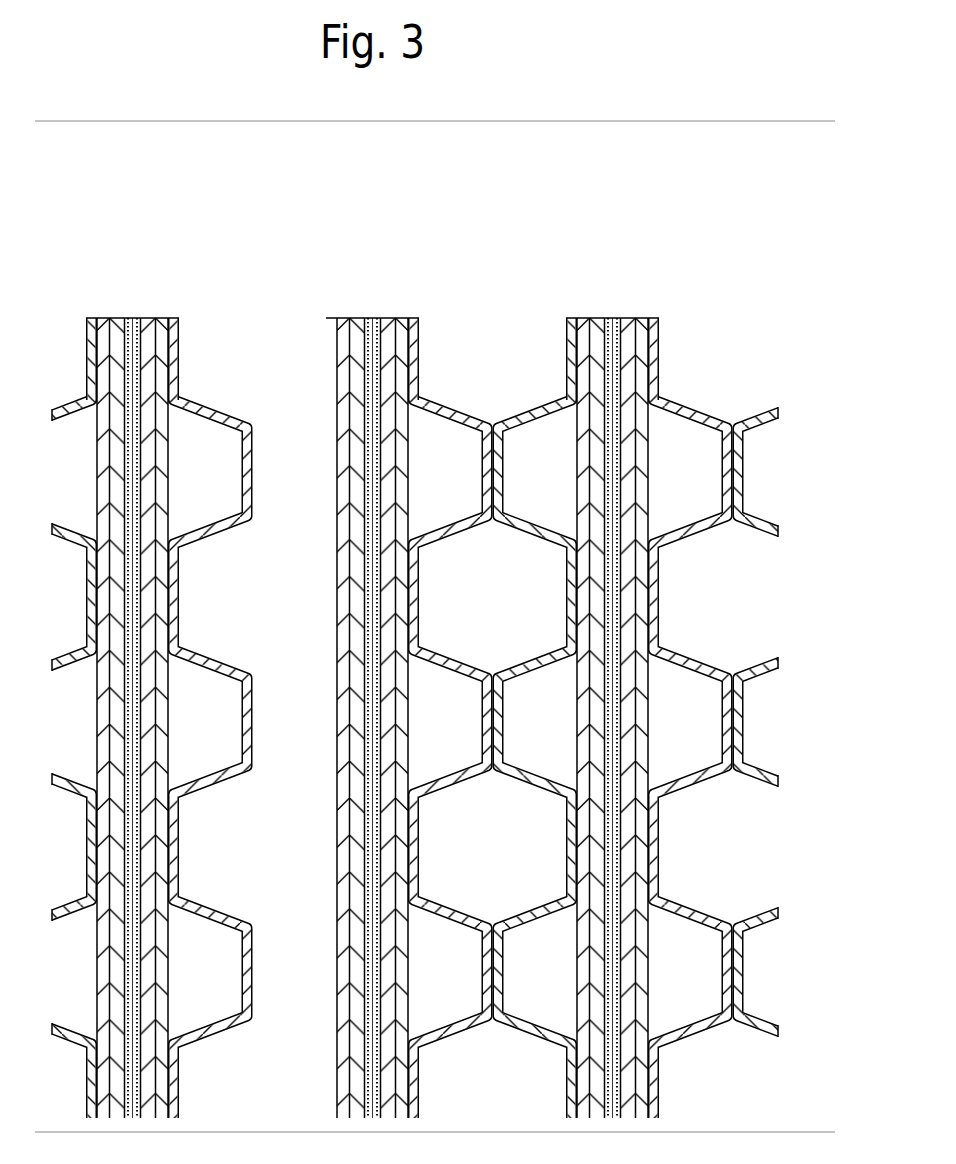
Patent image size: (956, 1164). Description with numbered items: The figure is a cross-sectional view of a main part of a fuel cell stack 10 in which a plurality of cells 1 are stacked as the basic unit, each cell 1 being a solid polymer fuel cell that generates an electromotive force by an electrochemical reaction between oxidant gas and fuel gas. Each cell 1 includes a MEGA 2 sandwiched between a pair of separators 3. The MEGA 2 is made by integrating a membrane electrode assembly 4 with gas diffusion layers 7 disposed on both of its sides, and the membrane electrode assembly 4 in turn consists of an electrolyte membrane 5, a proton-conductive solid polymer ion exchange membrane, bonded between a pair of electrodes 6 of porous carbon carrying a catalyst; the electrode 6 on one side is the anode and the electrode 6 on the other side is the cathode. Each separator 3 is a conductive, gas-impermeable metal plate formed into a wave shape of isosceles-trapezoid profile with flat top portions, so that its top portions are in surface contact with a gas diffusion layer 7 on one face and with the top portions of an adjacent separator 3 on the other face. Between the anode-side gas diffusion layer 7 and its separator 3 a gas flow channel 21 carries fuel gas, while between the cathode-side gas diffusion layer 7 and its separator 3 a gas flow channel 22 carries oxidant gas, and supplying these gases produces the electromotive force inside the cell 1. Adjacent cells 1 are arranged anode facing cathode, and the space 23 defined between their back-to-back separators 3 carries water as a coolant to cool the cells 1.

The cell 1 is at (487, 641).
The MEGA 2 is at (518, 661).
The separator 3 is at (680, 392).
The membrane electrode assembly 4 is at (372, 678).
The electrolyte membrane 5 is at (612, 317).
The electrode 6 is at (628, 317).
The gas diffusion layer 7 is at (646, 317).
The fuel cell stack 10 is at (487, 628).
The gas flow channel 21 is at (552, 983).
The gas flow channel 22 is at (694, 983).
The space 23 is at (742, 855).